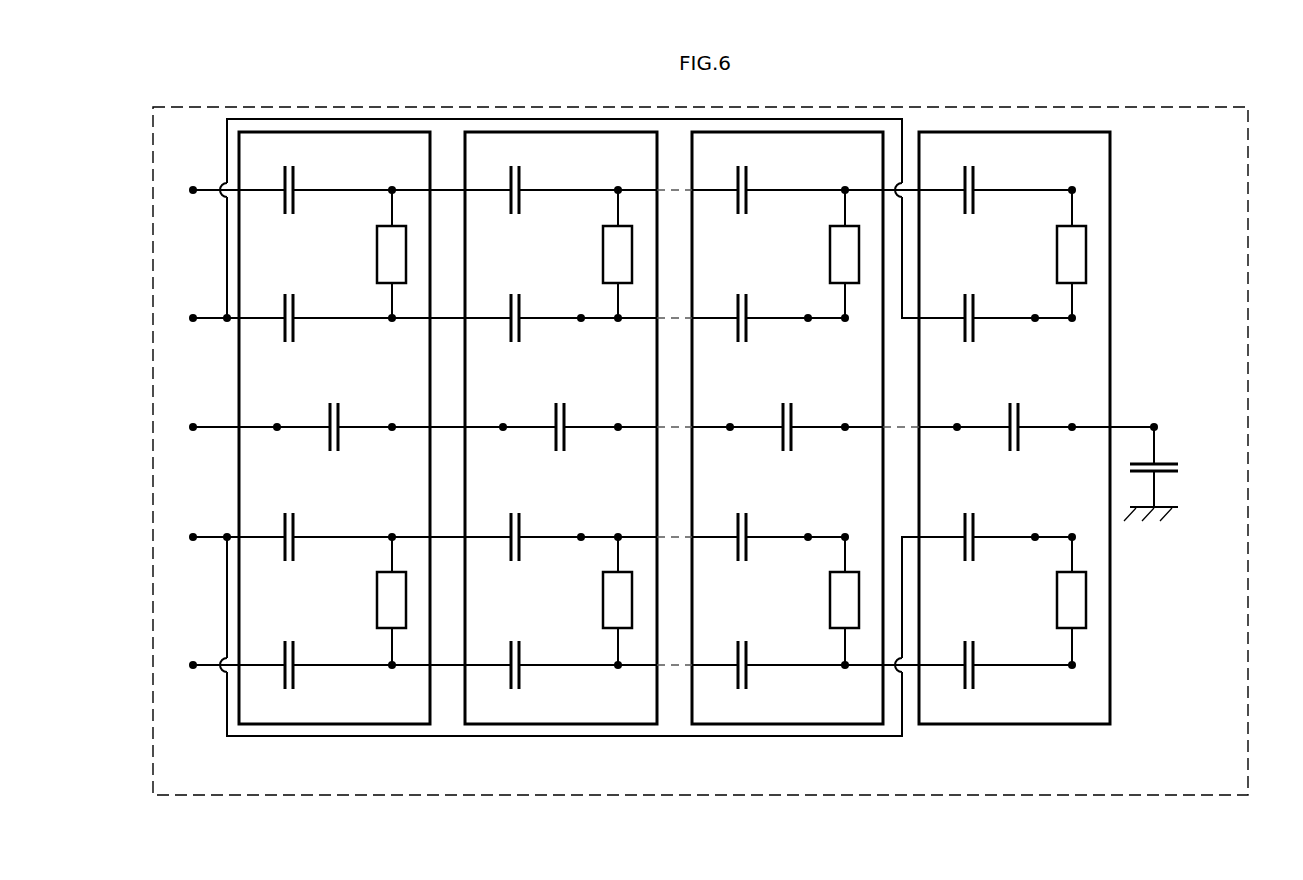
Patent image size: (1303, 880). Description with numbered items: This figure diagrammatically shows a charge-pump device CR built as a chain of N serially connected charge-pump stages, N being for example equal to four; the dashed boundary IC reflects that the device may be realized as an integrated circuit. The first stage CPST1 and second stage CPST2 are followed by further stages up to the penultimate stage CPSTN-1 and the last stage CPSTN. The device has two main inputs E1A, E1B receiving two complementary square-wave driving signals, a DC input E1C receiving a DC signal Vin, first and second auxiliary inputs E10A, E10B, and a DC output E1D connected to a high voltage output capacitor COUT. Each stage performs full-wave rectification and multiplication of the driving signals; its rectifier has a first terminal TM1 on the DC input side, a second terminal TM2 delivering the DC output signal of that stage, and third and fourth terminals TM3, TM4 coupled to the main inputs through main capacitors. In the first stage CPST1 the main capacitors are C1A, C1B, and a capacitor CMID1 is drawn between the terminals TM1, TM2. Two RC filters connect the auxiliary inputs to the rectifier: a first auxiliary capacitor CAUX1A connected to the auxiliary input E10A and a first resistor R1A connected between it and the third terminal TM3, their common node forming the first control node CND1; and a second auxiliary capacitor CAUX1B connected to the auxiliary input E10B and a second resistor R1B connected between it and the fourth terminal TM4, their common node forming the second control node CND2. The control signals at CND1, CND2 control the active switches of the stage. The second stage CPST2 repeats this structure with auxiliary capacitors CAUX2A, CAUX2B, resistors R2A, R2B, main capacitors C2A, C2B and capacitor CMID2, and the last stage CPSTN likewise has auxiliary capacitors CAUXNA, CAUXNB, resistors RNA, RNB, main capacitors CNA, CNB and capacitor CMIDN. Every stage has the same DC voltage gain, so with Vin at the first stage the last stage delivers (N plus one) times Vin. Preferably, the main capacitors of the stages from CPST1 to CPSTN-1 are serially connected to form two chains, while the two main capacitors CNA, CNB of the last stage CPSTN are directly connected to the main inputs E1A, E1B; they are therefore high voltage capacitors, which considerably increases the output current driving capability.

The integrated circuit IC is at (193, 106).
The charge pump circuit CR is at (1256, 91).
The charge-pump stage CPST1 is at (336, 740).
The charge-pump stage CPST2 is at (562, 740).
The penultimate charge-pump stage CPSTN-1 is at (789, 740).
The last charge-pump stage CPSTN is at (1016, 740).
The first auxiliary input E10A is at (193, 186).
The main input E1A is at (193, 314).
The DC input E1C is at (193, 423).
The main input E1B is at (193, 533).
The second auxiliary input E10B is at (193, 661).
The DC output E1D is at (1154, 423).
The high voltage output capacitor COUT is at (1176, 474).
The first auxiliary capacitor CAUX1A is at (285, 177).
The first resistor R1A is at (377, 255).
The main capacitor C1A is at (291, 306).
The first stage middle capacitor CMID1 is at (332, 415).
The main capacitor C1B is at (291, 549).
The second resistor R1B is at (377, 601).
The second auxiliary capacitor CAUX1B is at (285, 678).
The second stage A-side auxiliary capacitor CAUX2A is at (511, 177).
The second stage A-side resistor R2A is at (603, 255).
The main capacitor C2A is at (517, 306).
The second stage middle capacitor CMID2 is at (558, 415).
The main capacitor C2B is at (517, 549).
The second stage B-side resistor R2B is at (603, 601).
The second stage B-side auxiliary capacitor CAUX2B is at (511, 678).
The Nth stage A-side auxiliary capacitor CAUXNA is at (965, 177).
The Nth stage A-side resistor RNA is at (1057, 255).
The main capacitor CNA is at (971, 306).
The Nth stage middle capacitor CMIDN is at (1013, 415).
The main capacitor CNB is at (971, 549).
The Nth stage B-side resistor RNB is at (1057, 601).
The Nth stage B-side auxiliary capacitor CAUXNB is at (965, 678).
The first control node CND1 is at (392, 186).
The second control node CND2 is at (392, 669).
The first terminal TM1 is at (277, 431).
The second terminal TM2 is at (392, 431).
The third terminal TM3 is at (392, 322).
The fourth terminal TM4 is at (392, 533).